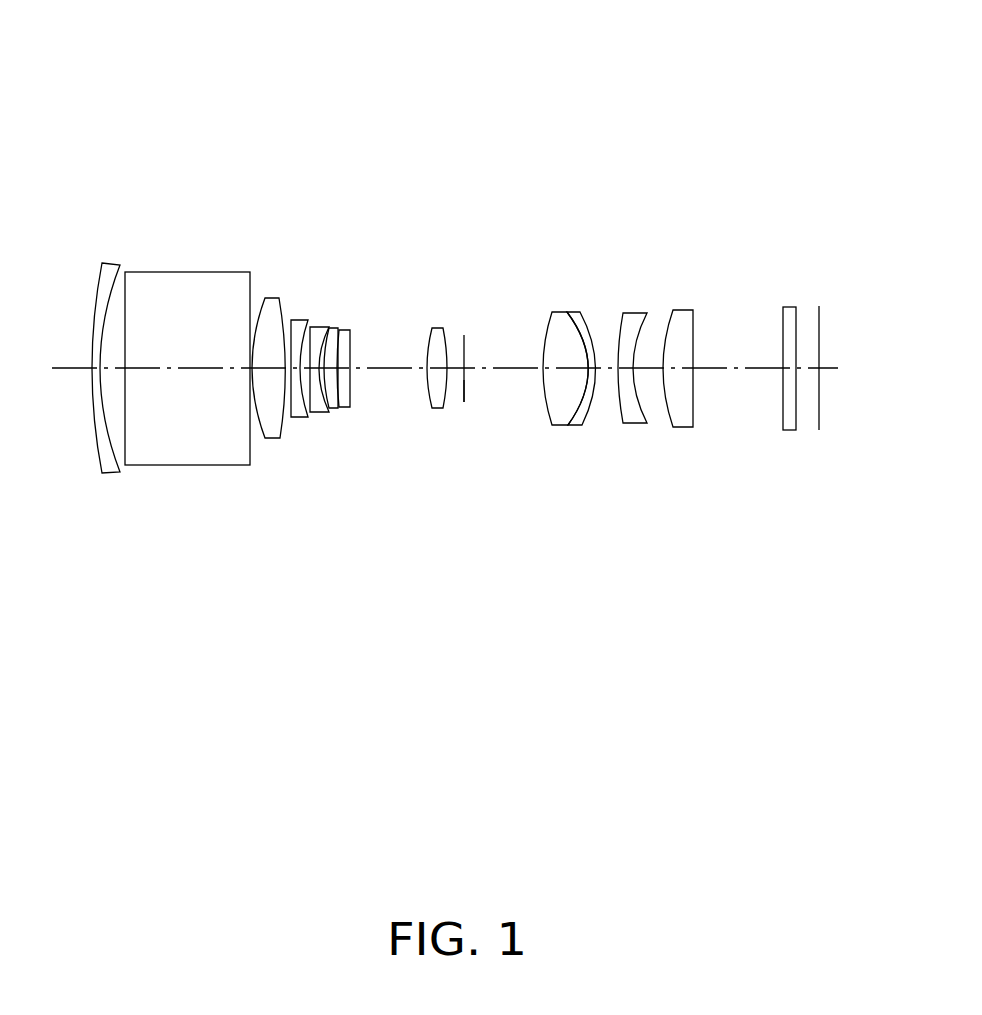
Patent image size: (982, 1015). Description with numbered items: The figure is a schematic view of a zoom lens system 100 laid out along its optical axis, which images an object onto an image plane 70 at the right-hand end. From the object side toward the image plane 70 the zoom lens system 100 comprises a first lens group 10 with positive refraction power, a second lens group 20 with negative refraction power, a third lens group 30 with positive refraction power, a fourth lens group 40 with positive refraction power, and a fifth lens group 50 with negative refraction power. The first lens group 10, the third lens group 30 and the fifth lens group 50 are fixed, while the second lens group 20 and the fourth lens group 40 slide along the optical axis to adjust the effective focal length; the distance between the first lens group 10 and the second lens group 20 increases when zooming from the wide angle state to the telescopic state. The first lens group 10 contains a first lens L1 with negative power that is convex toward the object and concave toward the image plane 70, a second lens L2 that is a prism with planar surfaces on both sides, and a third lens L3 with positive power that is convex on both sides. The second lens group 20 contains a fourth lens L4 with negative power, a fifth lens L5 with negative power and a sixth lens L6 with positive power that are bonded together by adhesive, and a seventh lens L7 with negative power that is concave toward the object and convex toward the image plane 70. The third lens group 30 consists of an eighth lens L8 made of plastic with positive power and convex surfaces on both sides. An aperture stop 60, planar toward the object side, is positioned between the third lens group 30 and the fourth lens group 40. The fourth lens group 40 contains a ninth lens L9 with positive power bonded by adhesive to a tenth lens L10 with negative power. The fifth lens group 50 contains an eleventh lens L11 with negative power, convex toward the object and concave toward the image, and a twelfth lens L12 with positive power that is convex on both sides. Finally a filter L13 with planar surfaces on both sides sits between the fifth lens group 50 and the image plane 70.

The zoom lens system 100 is at (480, 50).
The first lens group 10 is at (267, 213).
The second lens group 20 is at (330, 212).
The third lens group 30 is at (455, 318).
The fourth lens group 40 is at (587, 254).
The fifth lens group 50 is at (688, 251).
The aperture stop 60 is at (465, 388).
The image plane 70 is at (820, 318).
The first lens L1 is at (113, 270).
The second lens L2 is at (187, 282).
The third lens L3 is at (273, 305).
The fourth lens L4 is at (297, 318).
The fifth lens L5 is at (318, 326).
The sixth lens L6 is at (333, 328).
The seventh lens L7 is at (345, 330).
The eighth lens L8 is at (437, 328).
The ninth lens L9 is at (558, 312).
The tenth lens L10 is at (577, 312).
The eleventh lens L11 is at (637, 315).
The twelfth lens L12 is at (683, 310).
The filter L13 is at (788, 307).